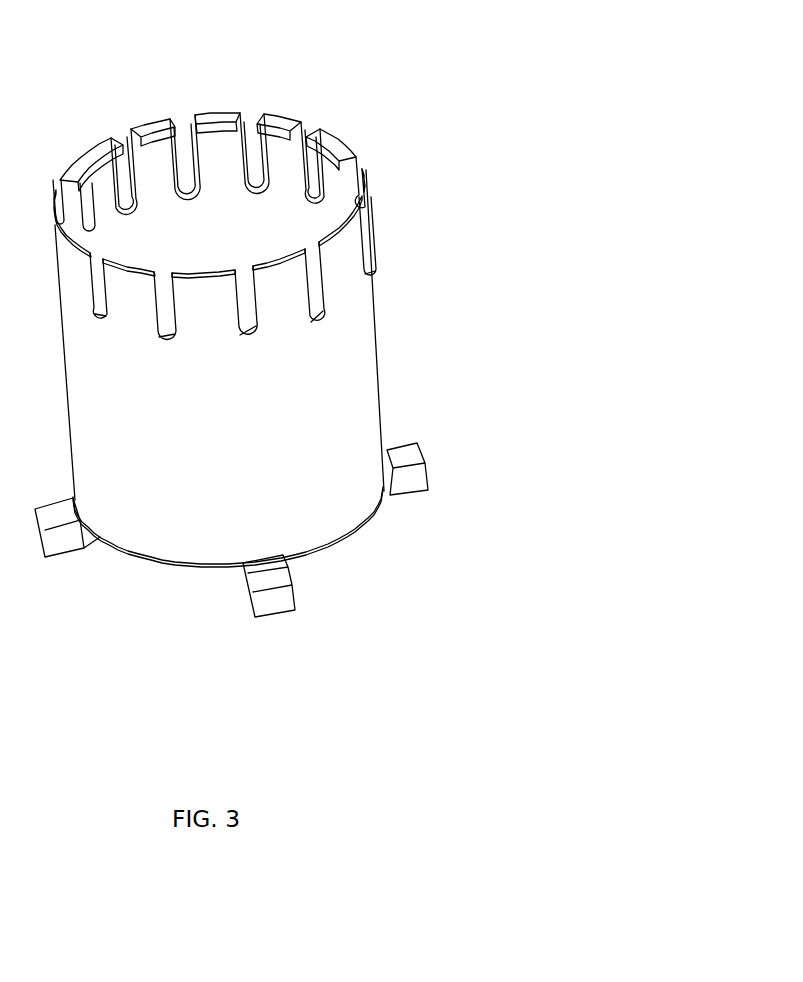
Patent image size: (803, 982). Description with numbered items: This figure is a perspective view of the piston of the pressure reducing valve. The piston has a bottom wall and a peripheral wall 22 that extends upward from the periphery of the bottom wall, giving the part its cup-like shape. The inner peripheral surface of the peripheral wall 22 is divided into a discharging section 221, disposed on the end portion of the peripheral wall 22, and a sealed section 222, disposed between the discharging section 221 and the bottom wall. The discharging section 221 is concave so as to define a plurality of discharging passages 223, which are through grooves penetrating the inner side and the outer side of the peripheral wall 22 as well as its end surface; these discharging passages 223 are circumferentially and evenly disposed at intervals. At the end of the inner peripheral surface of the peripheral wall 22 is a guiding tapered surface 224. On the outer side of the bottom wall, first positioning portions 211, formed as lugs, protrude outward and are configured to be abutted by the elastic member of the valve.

The peripheral wall 22 is at (208, 482).
The first positioning portions 211 is at (428, 478).
The discharging section 221 is at (150, 173).
The sealed section 222 is at (223, 258).
The discharging passages 223 is at (365, 247).
The guiding tapered surface 224 is at (213, 127).